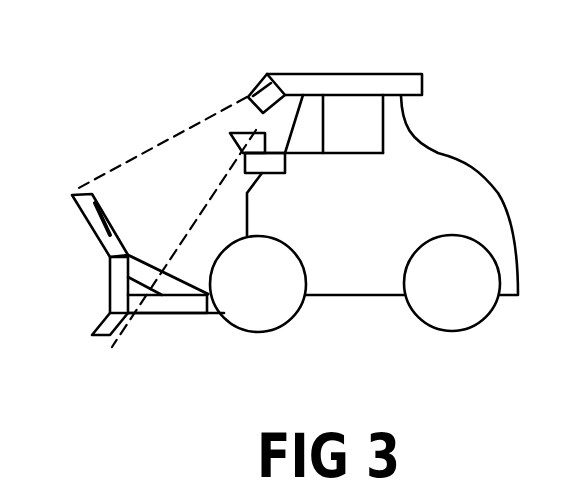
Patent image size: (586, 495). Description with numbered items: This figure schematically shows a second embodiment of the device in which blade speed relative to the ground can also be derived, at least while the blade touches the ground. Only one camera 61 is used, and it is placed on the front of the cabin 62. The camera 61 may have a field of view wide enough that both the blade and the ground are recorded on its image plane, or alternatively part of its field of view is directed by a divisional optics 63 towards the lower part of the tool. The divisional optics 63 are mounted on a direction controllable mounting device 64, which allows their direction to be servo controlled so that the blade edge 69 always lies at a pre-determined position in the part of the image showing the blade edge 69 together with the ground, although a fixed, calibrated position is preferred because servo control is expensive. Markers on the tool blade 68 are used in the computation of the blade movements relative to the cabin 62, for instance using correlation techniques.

The camera 61 is at (264, 94).
The cabin 62 is at (362, 90).
The divisional optics 63 is at (245, 135).
The direction controllable mounting device 64 is at (245, 173).
The tool blade 68 is at (110, 257).
The blade edge 69 is at (92, 335).